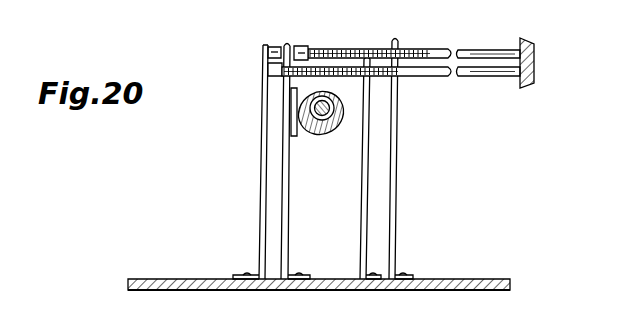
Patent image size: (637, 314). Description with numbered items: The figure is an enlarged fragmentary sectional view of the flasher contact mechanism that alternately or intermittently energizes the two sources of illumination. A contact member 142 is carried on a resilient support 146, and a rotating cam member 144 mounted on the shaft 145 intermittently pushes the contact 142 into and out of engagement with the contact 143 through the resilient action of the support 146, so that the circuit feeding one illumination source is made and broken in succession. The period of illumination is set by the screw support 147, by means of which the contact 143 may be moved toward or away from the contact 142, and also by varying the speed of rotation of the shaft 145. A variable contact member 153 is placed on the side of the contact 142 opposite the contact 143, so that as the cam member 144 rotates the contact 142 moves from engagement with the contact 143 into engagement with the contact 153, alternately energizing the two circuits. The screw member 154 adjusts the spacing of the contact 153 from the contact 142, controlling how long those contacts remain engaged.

The contact member 142 is at (289, 45).
The contact 143 is at (305, 46).
The rotating cam member 144 is at (309, 142).
The shaft 145 is at (343, 121).
The support 146 is at (283, 185).
The screw support 147 is at (437, 52).
The variable contact member 153 is at (263, 50).
The screw member 154 is at (425, 76).